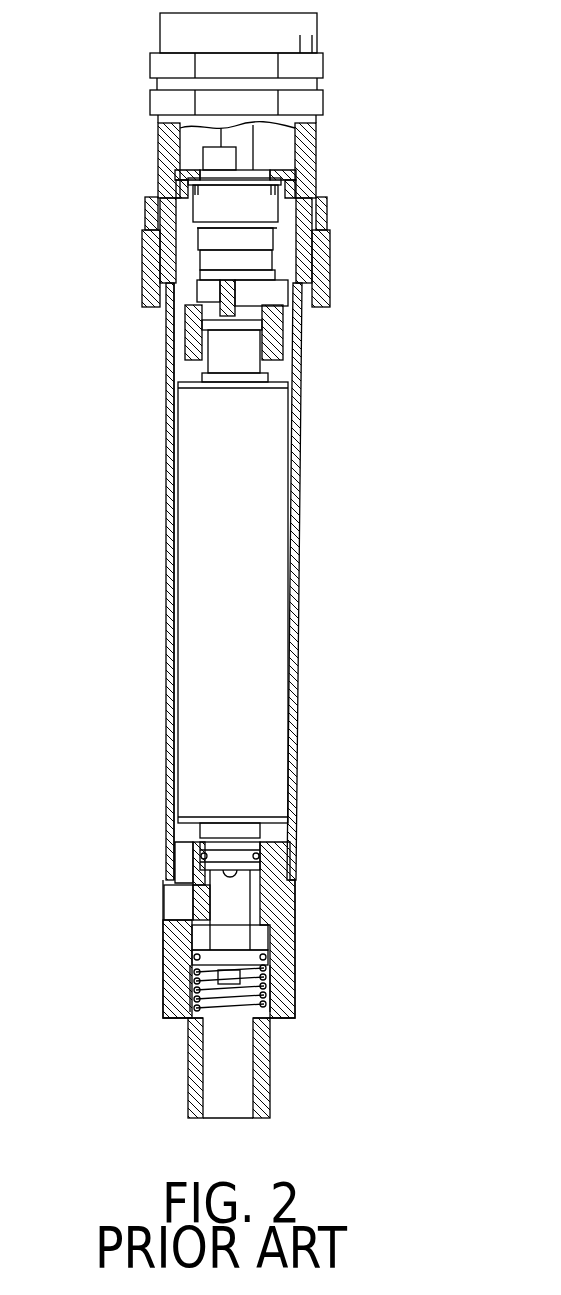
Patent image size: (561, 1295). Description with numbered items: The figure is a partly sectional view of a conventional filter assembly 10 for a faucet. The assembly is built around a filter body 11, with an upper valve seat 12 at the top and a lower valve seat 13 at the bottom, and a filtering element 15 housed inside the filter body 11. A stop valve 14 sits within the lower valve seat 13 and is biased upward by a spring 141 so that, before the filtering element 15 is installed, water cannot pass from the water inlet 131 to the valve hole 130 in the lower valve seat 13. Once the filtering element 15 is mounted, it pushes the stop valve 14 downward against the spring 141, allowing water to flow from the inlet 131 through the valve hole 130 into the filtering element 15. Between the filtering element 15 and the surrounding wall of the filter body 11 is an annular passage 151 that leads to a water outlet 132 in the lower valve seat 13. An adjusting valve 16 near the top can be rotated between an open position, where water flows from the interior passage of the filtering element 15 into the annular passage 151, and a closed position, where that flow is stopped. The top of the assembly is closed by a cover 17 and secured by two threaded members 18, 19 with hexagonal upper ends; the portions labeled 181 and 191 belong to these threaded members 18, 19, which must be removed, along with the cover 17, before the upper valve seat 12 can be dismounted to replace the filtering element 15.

The filter assembly 10 is at (308, 660).
The filter body 11 is at (295, 780).
The upper valve seat 12 is at (278, 338).
The lower valve seat 13 is at (278, 888).
The valve hole 130 is at (212, 907).
The water inlet 131 is at (248, 1040).
The water outlet 132 is at (173, 902).
The stop valve 14 is at (240, 932).
The spring 141 is at (270, 983).
The filtering element 15 is at (270, 733).
The annular passage 151 is at (300, 513).
The adjusting valve 16 is at (263, 209).
The cover 17 is at (312, 35).
The threaded member 18 is at (308, 161).
The head ring 181 is at (313, 103).
The threaded member 19 is at (325, 283).
The nut flange 191 is at (327, 221).